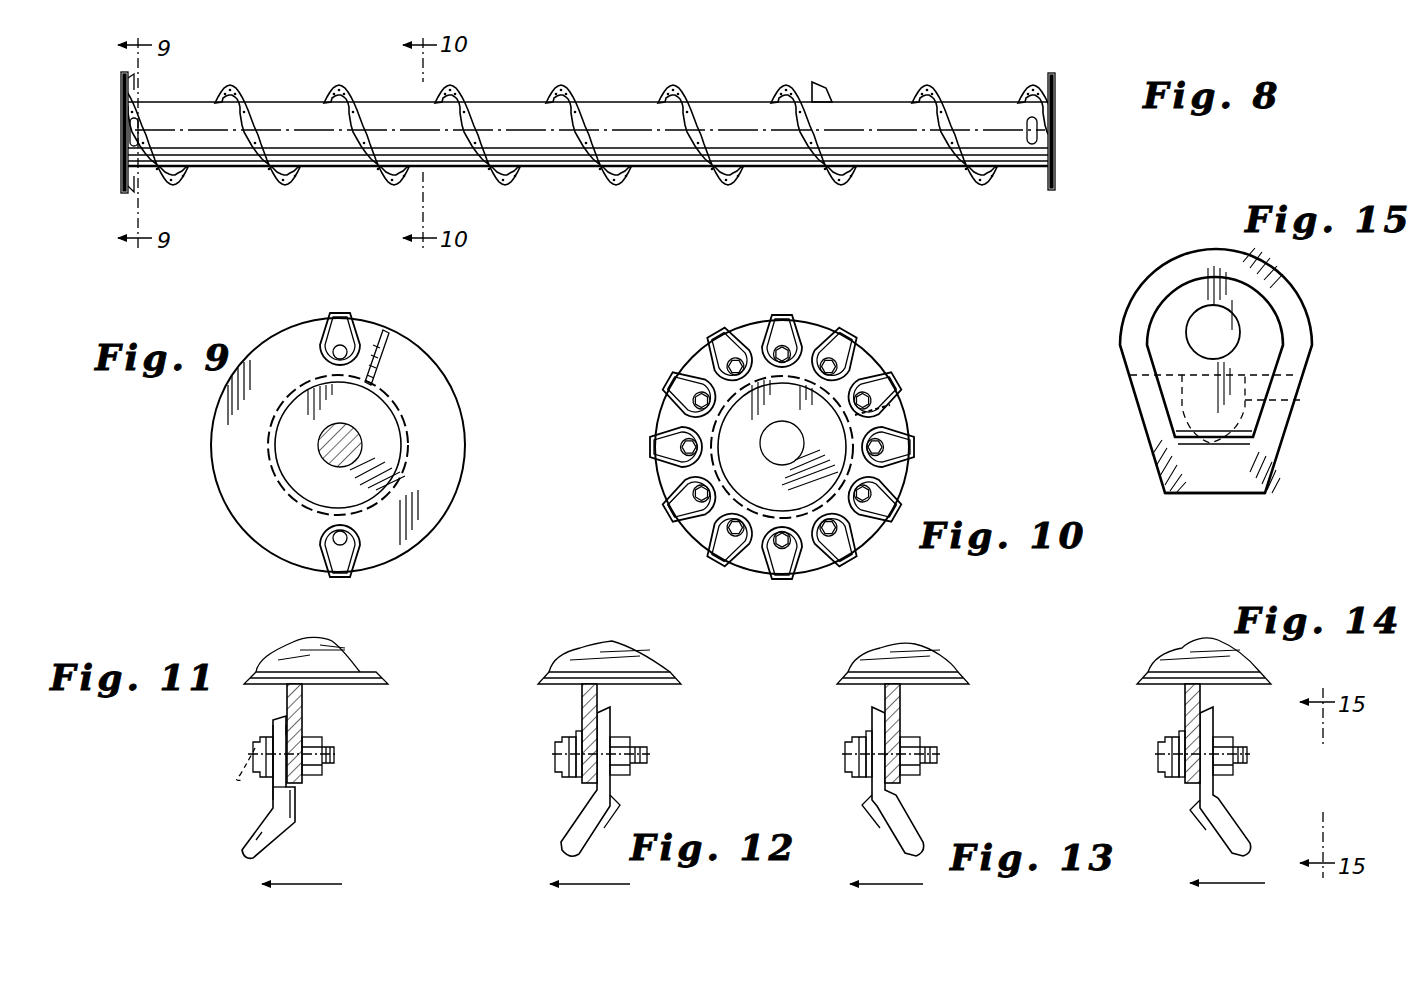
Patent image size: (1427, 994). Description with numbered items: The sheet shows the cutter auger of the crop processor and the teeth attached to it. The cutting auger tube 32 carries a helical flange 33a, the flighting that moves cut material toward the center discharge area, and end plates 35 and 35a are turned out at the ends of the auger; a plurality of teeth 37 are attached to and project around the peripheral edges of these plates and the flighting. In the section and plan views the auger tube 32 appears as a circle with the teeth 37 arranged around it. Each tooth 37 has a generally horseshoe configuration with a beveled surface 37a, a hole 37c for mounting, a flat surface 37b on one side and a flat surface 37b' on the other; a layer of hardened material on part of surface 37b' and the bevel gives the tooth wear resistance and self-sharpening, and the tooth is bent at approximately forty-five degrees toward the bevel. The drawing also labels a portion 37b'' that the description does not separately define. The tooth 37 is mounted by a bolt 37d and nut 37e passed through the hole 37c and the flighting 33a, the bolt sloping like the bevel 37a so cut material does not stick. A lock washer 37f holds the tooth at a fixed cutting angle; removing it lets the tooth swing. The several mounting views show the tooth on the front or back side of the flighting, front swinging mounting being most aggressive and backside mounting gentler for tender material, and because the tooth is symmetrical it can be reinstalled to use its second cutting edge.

In FIG. 8, the cutting auger tube 32 is at (775, 150).
In FIG. 9, the cutting auger tube 32 is at (410, 438).
In FIG. 11, the cutting auger tube 32 is at (290, 666).
In FIG. 12, the cutting auger tube 32 is at (620, 660).
In FIG. 13, the cutting auger tube 32 is at (920, 660).
In FIG. 14, the cutting auger tube 32 is at (1178, 666).
In FIG. 8, the helical flange 33a is at (385, 184).
In FIG. 9, the helical flange 33a is at (386, 358).
In FIG. 11, the helical flange 33a is at (304, 708).
In FIG. 12, the helical flange 33a is at (600, 706).
In FIG. 13, the helical flange 33a is at (903, 708).
In FIG. 14, the helical flange 33a is at (1184, 708).
In FIG. 8, the end plate 35 is at (1056, 80).
In FIG. 8, the end plate 35a is at (121, 86).
In FIG. 9, the end plate 35a is at (462, 400).
In FIG. 8, the tooth 37 is at (118, 196).
In FIG. 9, the tooth 37 is at (356, 578).
In FIG. 10, the tooth 37 is at (852, 318).
In FIG. 15, the tooth 37 is at (1100, 305).
In FIG. 11, the tooth 37 is at (238, 848).
In FIG. 12, the tooth 37 is at (568, 838).
In FIG. 13, the tooth 37 is at (900, 818).
In FIG. 14, the tooth 37 is at (1232, 815).
In FIG. 15, the beveled surface 37a is at (1290, 340).
In FIG. 15, the flat surface 37b is at (1249, 352).
In FIG. 11, the flat surface 37b is at (242, 787).
In FIG. 11, the flat surface 37b' is at (332, 804).
In FIG. 15, the bracket leg 37b'' is at (1247, 409).
In FIG. 11, the bracket leg 37b'' is at (316, 842).
In FIG. 15, the hole 37c is at (1195, 318).
In FIG. 11, the hole 37c is at (238, 778).
In FIG. 10, the bolt 37d is at (870, 414).
In FIG. 11, the bolt 37d is at (262, 745).
In FIG. 11, the nut 37e is at (320, 740).
In FIG. 12, the lock washer 37f is at (572, 732).